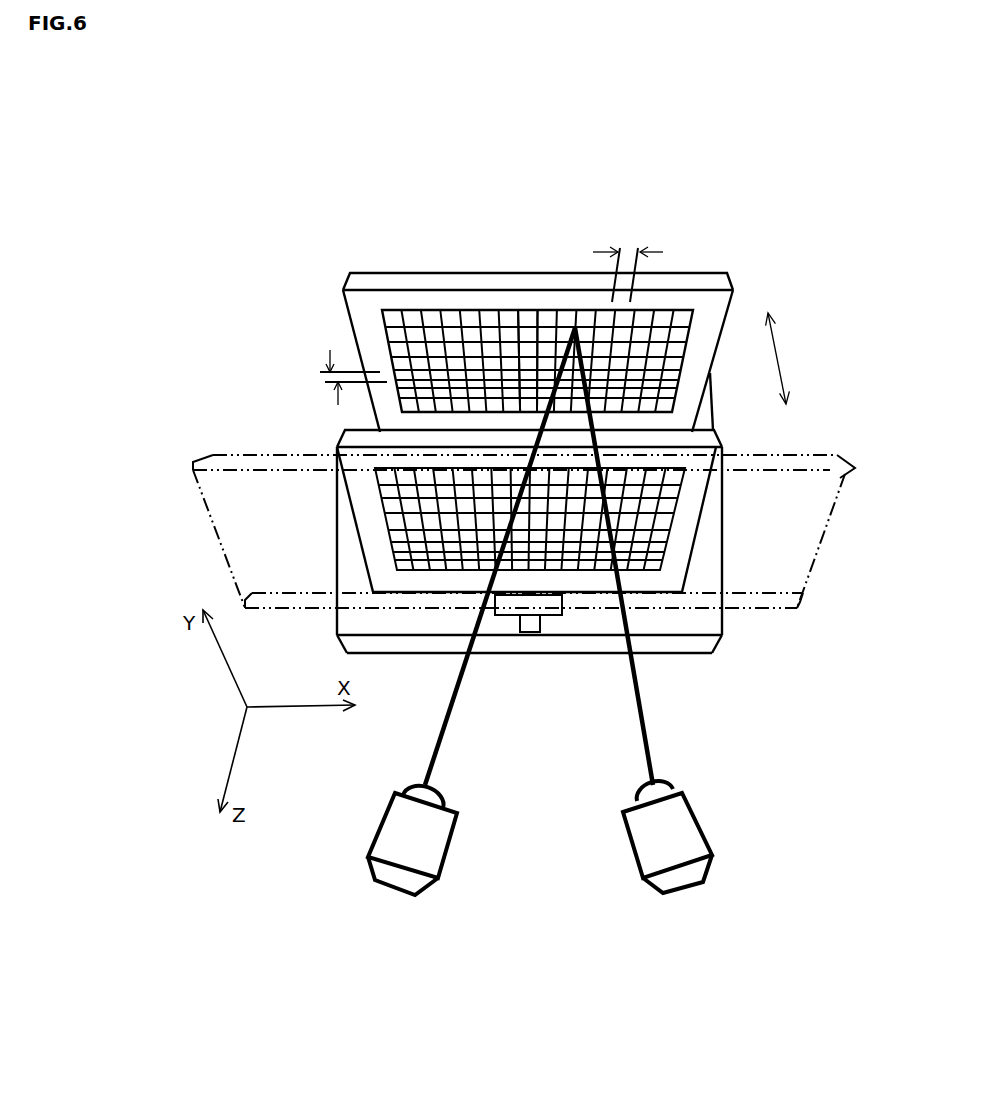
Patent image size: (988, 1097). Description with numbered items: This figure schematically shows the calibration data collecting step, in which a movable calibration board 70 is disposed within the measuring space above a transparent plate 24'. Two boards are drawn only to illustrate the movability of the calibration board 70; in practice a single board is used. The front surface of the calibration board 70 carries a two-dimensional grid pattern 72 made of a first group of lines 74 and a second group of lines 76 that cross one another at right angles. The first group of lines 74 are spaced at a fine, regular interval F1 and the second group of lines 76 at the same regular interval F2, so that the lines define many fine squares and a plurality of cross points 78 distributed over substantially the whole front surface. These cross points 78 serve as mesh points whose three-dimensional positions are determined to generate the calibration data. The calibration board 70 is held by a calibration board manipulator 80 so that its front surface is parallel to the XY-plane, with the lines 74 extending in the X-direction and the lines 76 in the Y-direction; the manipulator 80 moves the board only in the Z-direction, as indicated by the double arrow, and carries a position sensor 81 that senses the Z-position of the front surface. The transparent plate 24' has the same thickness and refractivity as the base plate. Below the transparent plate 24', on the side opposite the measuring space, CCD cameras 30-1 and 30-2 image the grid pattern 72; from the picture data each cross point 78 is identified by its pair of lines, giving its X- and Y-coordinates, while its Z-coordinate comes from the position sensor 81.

The movable calibration board 70 is at (676, 278).
The two-dimensional grid pattern 72 is at (411, 304).
The first group of lines 74 is at (398, 345).
The second group of lines 76 is at (497, 317).
The cross points 78 is at (522, 322).
The regular interval F1 is at (337, 377).
The regular interval F2 is at (628, 257).
The calibration board manipulator 80 is at (698, 622).
The position sensor 81 is at (548, 633).
The transparent plate 24' is at (549, 531).
The CCD camera 30-1 is at (418, 851).
The CCD camera 30-2 is at (668, 850).